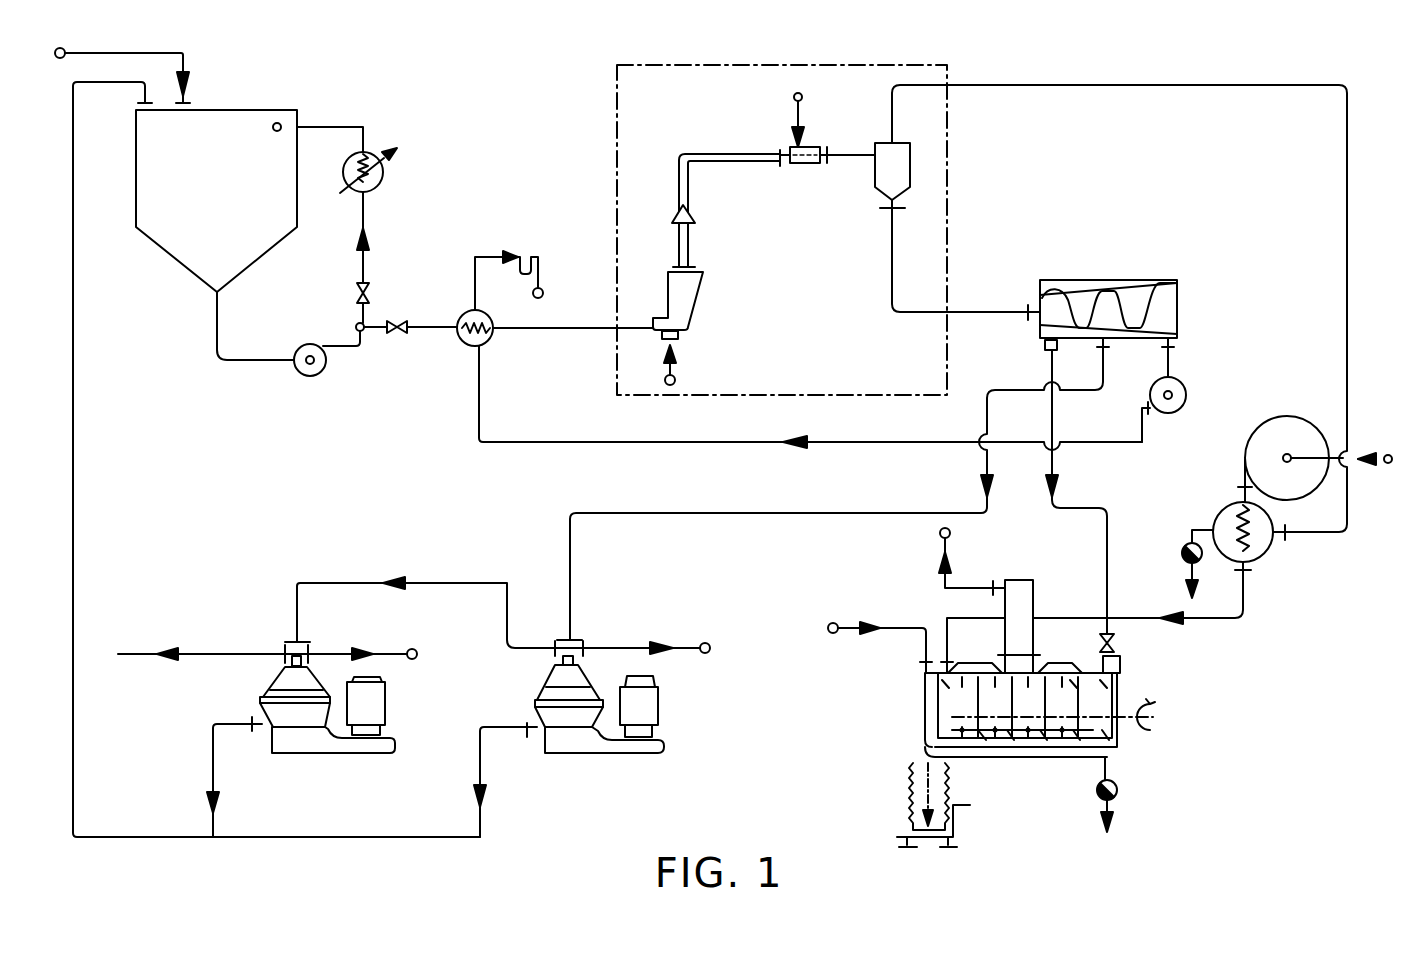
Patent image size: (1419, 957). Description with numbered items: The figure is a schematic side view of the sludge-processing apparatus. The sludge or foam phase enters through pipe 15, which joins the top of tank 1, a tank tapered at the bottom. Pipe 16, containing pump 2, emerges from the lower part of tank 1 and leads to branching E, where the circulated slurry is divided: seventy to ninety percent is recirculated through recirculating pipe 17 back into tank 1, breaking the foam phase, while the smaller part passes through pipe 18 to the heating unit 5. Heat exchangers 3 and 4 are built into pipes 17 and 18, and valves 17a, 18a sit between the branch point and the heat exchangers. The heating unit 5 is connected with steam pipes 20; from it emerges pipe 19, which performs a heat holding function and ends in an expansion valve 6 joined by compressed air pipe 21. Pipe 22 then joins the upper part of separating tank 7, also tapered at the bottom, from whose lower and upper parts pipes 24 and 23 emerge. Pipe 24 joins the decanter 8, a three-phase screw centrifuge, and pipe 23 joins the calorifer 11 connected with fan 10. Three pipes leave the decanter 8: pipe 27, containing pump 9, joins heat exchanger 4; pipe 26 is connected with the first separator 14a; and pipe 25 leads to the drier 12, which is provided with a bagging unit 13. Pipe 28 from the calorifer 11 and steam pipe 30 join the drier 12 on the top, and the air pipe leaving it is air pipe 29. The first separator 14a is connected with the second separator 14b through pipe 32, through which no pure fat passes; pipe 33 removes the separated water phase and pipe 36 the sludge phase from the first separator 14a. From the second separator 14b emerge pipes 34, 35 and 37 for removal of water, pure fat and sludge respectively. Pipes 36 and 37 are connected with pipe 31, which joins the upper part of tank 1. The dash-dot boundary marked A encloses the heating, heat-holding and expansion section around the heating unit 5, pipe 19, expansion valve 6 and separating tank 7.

The tank 1 is at (247, 129).
The pump 2 is at (312, 378).
The heat exchanger 3 is at (386, 163).
The heat exchanger 4 is at (471, 349).
The heating unit 5 is at (687, 293).
The expansion valve 6 is at (796, 170).
The separating tank 7 is at (900, 173).
The decanter 8 is at (1082, 260).
The pump 9 is at (1188, 395).
The fan 10 is at (1293, 416).
The calorifer 11 is at (1270, 547).
The drier 12 is at (1138, 749).
The bagging unit 13 is at (927, 837).
The first separator 14a is at (622, 755).
The second separator 14b is at (293, 773).
The pipe 15 is at (67, 58).
The pipe 16 is at (240, 367).
The recirculating pipe 17 is at (367, 215).
The valve 17a is at (373, 293).
The pipe 18 is at (583, 323).
The valve 18a is at (396, 343).
The pipe 19 is at (687, 180).
The steam pipes 20 is at (673, 362).
The compressed air pipe 21 is at (803, 112).
The pipe 22 is at (845, 160).
The pipe 23 is at (1082, 88).
The pipe 24 is at (892, 290).
The pipe 25 is at (1052, 372).
The pipe 26 is at (1105, 367).
The pipe 27 is at (1172, 364).
The pipe 28 is at (1245, 624).
The air pipe 29 is at (941, 543).
The steam pipe 30 is at (847, 633).
The pipe 31 is at (357, 837).
The pipe 32 is at (458, 583).
The pipe 33 is at (702, 646).
The pipe 34 is at (412, 649).
The pipe 35 is at (135, 657).
The pipe 36 is at (482, 812).
The pipe 37 is at (210, 768).
The treatment zone A is at (617, 92).
The branching E is at (354, 327).